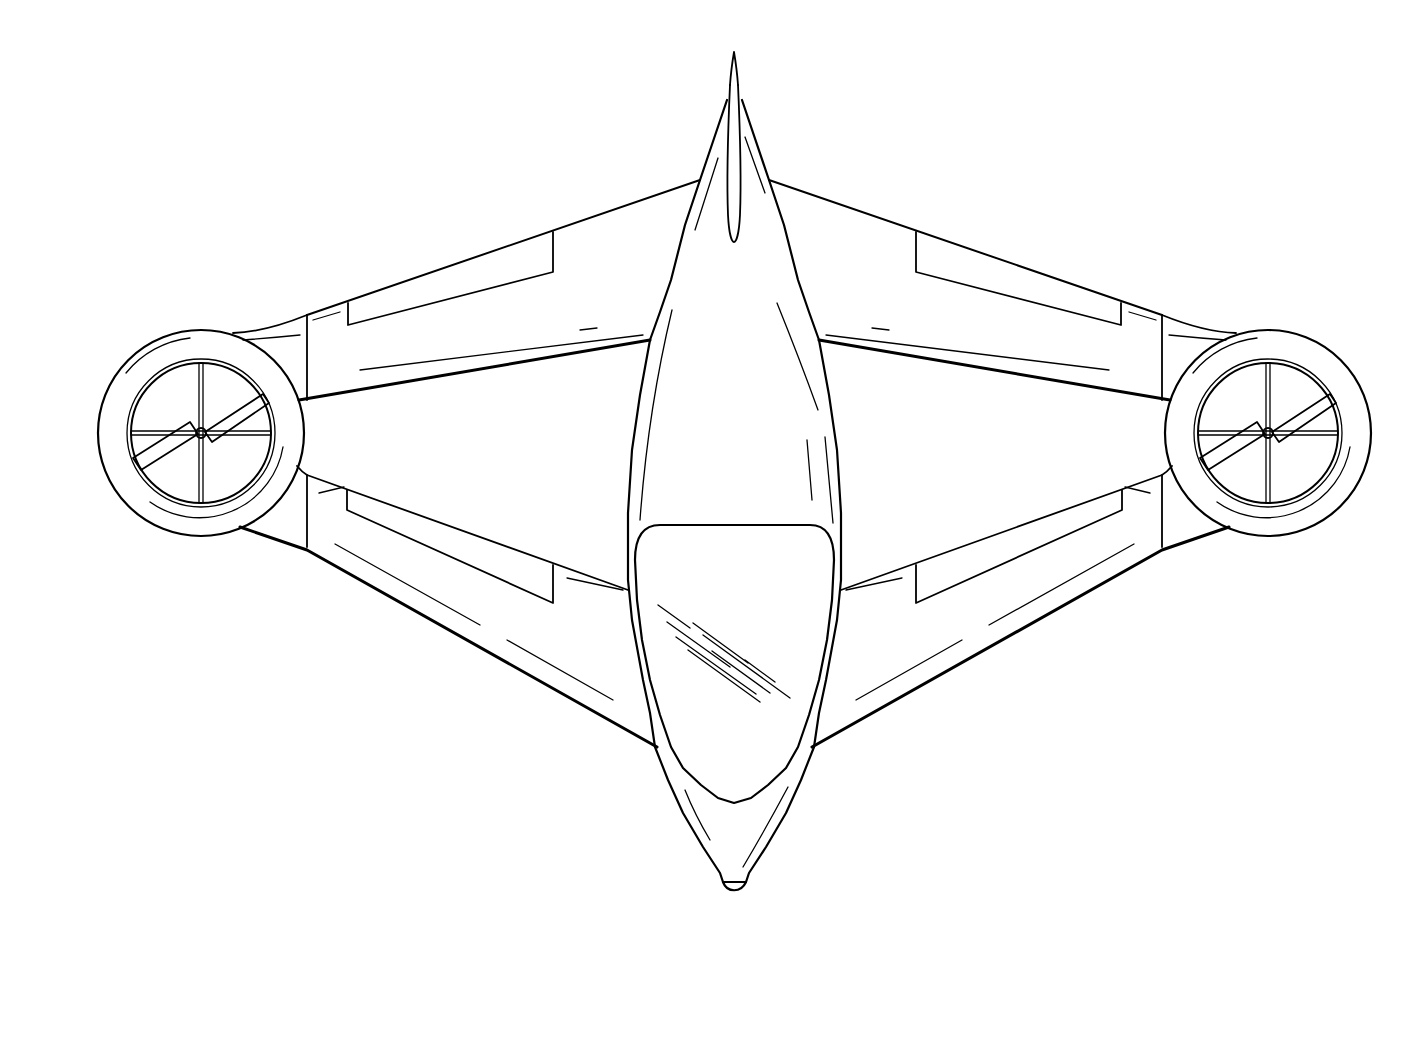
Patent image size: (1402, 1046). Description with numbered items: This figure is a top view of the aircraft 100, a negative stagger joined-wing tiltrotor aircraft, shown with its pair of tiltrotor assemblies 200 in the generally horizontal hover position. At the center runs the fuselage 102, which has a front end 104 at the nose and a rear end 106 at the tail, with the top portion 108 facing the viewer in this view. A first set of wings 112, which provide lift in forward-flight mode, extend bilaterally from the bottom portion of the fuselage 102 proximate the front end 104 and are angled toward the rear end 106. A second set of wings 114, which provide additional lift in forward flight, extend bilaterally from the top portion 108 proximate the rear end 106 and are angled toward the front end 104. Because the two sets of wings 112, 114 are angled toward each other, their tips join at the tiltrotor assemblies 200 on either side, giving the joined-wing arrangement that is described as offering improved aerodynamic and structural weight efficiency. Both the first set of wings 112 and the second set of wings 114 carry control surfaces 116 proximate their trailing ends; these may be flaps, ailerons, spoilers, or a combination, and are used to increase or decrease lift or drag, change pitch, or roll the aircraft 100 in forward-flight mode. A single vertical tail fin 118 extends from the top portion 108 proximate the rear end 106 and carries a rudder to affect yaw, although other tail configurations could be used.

The aircraft 100 is at (281, 101).
The fuselage 102 is at (627, 456).
The front end 104 is at (728, 893).
The rear end 106 is at (727, 143).
The top portion 108 is at (777, 427).
The first set of wings 112 is at (507, 623).
The second set of wings 114 is at (620, 212).
The control surfaces 116 is at (447, 273).
The vertical tail fin 118 is at (738, 72).
The tiltrotor assemblies 200 is at (154, 332).